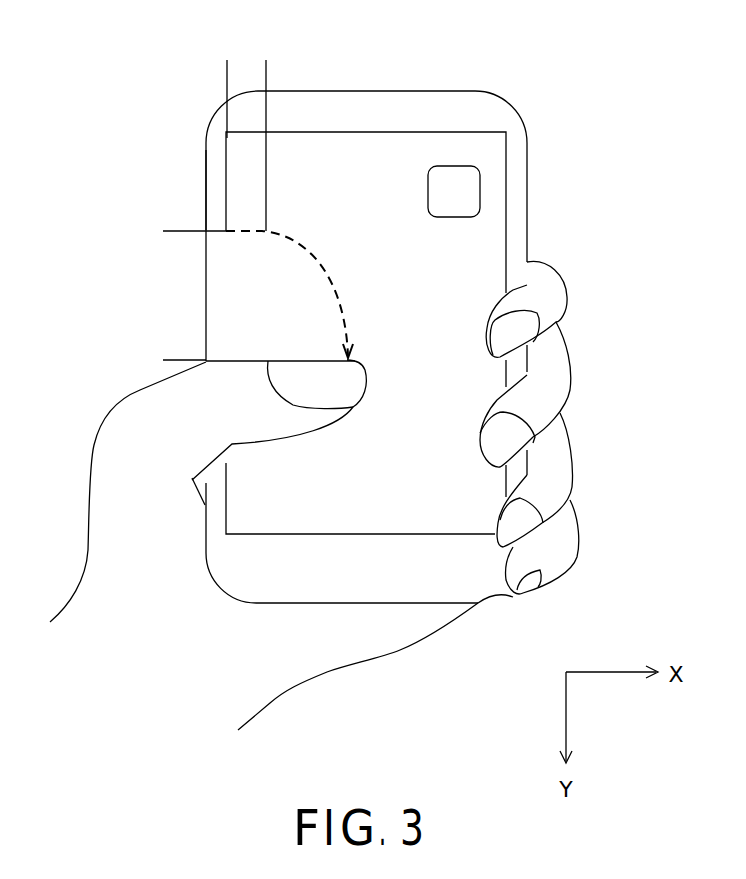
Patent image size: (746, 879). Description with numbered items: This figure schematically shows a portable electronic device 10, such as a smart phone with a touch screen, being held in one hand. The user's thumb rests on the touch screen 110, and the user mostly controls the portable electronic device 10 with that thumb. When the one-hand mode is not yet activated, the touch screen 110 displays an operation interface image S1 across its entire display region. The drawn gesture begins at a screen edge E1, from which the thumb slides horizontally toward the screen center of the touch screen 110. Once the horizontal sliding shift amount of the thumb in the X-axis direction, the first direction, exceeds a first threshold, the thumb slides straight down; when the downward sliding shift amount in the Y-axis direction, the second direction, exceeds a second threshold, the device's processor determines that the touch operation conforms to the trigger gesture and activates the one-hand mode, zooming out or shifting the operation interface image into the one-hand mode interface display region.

The portable electronic device 10 is at (347, 88).
The touch screen 110 is at (393, 130).
The screen edge E1 is at (215, 192).
The operation interface image S1 is at (398, 258).